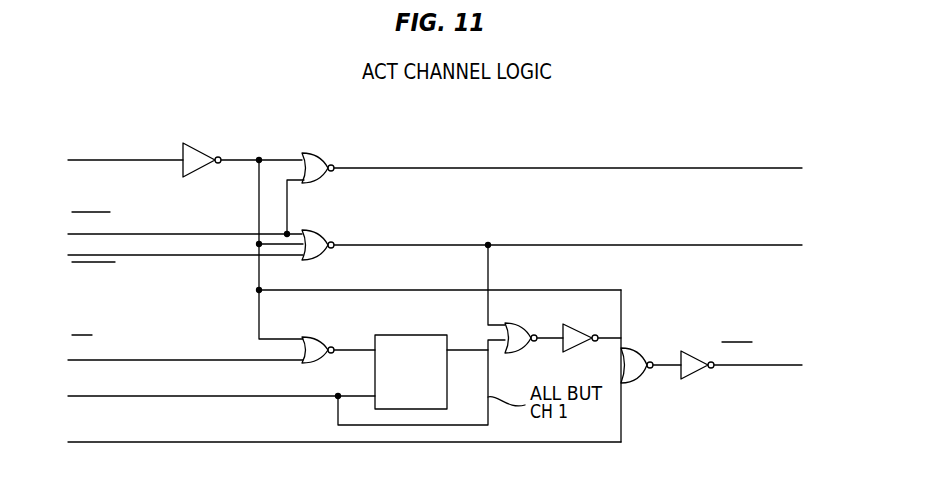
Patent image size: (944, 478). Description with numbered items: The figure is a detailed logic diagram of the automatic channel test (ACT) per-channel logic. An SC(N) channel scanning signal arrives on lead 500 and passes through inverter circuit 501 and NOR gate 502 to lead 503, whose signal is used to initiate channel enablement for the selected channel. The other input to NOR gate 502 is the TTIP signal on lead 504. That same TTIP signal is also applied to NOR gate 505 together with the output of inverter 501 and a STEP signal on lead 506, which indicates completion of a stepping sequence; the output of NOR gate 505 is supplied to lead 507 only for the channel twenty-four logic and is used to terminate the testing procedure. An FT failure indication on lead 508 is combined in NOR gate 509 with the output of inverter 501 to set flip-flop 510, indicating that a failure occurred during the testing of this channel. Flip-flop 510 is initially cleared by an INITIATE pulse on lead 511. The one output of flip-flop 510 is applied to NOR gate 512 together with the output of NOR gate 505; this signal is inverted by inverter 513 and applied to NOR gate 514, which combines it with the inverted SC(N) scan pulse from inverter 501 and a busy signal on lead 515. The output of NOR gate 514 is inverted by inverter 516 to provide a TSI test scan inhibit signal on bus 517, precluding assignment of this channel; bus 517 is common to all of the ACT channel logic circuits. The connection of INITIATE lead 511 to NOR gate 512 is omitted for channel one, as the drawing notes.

The lead 500 is at (137, 161).
The inverter circuit 501 is at (242, 151).
The NOR gate 502 is at (312, 183).
The lead 503 is at (541, 167).
The TTIP lead 504 is at (172, 233).
The NOR gate 505 is at (319, 236).
The lead 506 is at (168, 256).
The lead 507 is at (541, 244).
The lead 508 is at (175, 359).
The NOR gate 509 is at (336, 340).
The flip-flop 510 is at (415, 348).
The INITIATE lead 511 is at (248, 395).
The NOR gate 512 is at (533, 327).
The inverter 513 is at (591, 327).
The NOR gate 514 is at (651, 356).
The lead 515 is at (258, 441).
The inverter 516 is at (697, 378).
The bus 517 is at (770, 366).